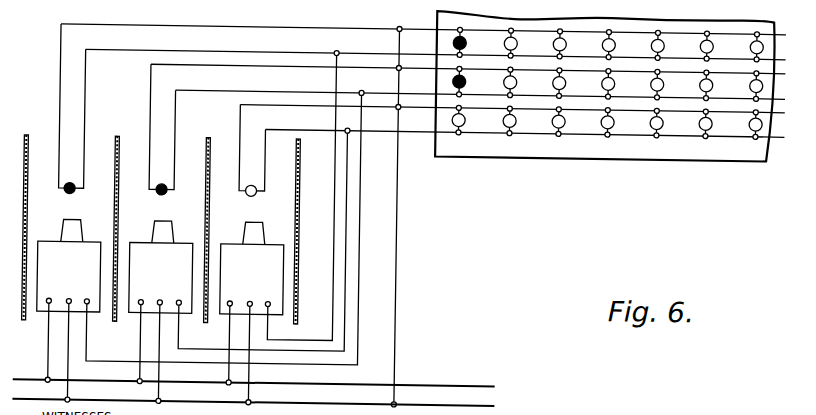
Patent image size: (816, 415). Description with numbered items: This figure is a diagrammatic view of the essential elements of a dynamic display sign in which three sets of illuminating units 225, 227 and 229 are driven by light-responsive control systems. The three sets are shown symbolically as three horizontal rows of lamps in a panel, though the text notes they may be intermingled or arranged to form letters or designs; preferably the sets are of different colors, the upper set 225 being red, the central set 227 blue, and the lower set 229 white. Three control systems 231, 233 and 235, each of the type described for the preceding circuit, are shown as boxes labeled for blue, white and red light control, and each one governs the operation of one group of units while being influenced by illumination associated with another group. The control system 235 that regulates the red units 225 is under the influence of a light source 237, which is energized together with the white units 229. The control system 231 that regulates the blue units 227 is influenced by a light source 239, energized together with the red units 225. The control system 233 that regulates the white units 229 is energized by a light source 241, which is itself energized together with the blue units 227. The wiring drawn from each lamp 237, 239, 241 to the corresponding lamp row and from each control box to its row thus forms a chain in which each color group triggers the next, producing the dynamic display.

The upper set of illuminating units 225 is at (551, 48).
The central set of illuminating units 227 is at (551, 86).
The lower set of illuminating units 229 is at (551, 126).
The control system 231 is at (90, 245).
The control system 233 is at (181, 245).
The control system 235 is at (274, 245).
The light source 237 is at (250, 198).
The light source 239 is at (70, 197).
The light source 241 is at (159, 198).